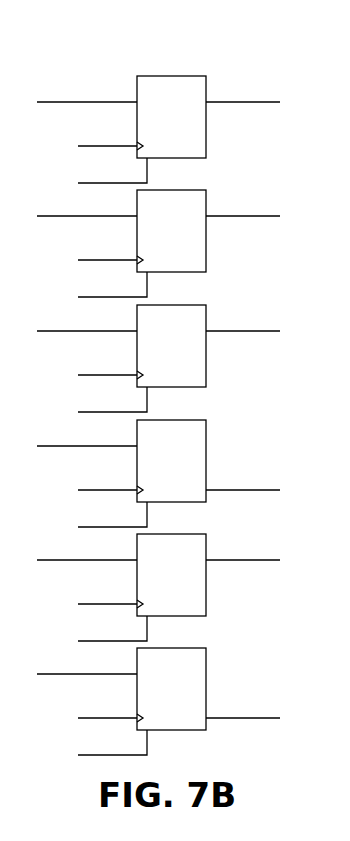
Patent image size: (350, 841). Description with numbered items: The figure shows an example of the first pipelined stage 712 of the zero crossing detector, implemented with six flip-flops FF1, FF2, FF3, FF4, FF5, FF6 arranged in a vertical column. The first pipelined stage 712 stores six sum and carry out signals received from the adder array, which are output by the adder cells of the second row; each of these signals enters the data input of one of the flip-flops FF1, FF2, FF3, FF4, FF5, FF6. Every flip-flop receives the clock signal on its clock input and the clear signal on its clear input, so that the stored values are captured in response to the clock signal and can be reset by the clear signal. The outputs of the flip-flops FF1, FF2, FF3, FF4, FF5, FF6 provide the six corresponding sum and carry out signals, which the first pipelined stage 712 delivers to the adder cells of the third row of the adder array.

The first pipelined stage 712 is at (177, 52).
The flip-flop FF1 is at (190, 145).
The flip-flop FF2 is at (190, 259).
The flip-flop FF3 is at (190, 374).
The flip-flop FF4 is at (200, 471).
The flip-flop FF5 is at (190, 603).
The flip-flop FF6 is at (200, 699).